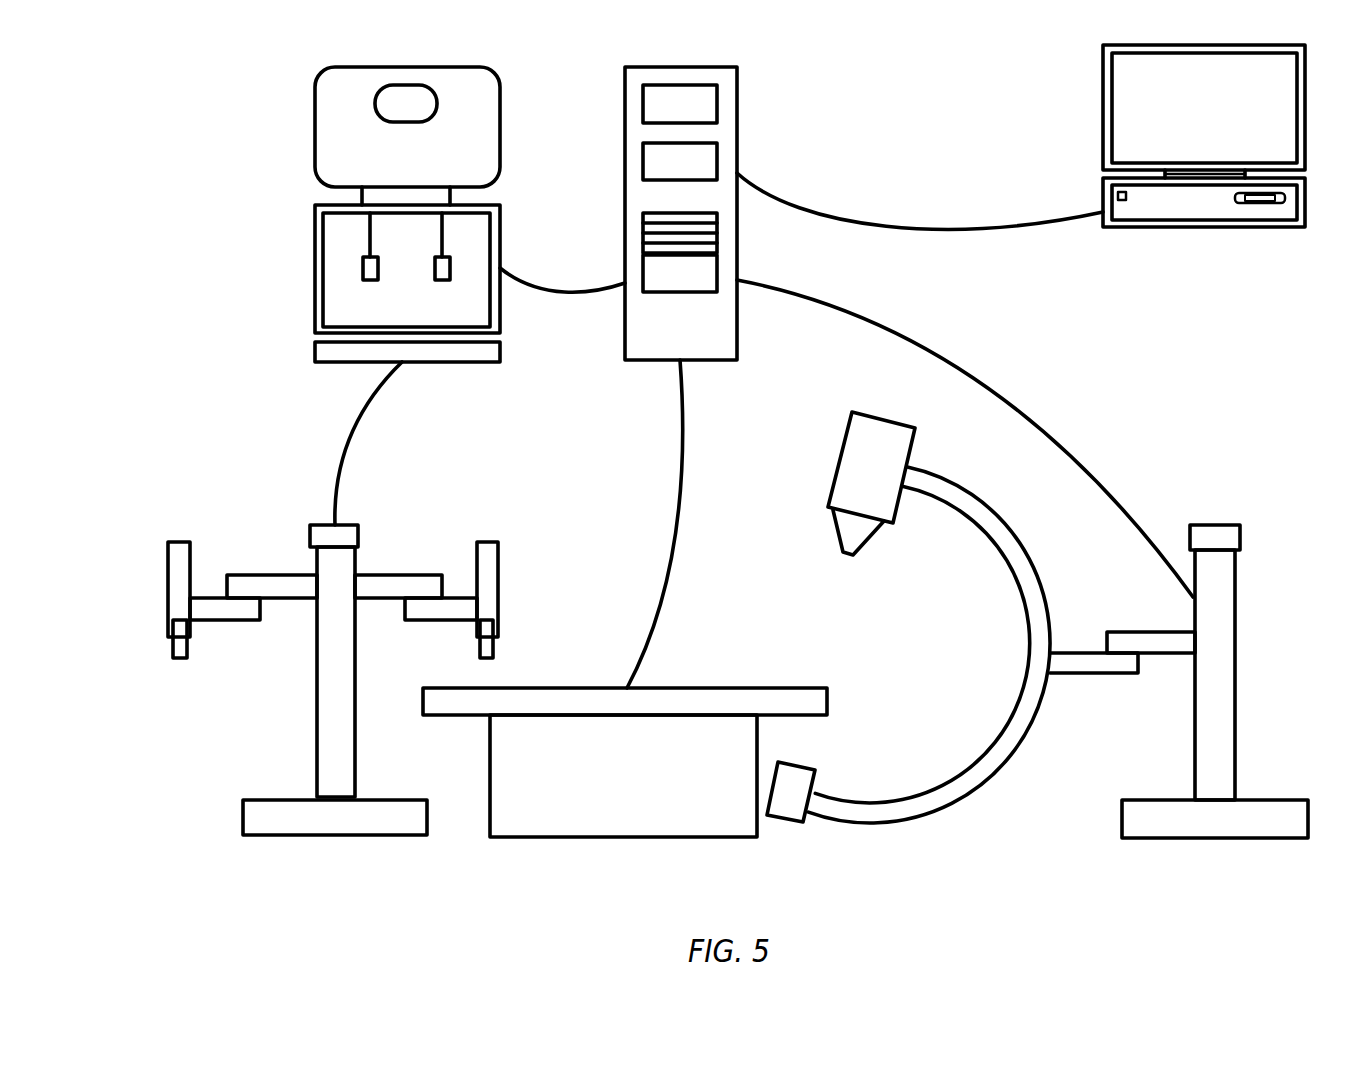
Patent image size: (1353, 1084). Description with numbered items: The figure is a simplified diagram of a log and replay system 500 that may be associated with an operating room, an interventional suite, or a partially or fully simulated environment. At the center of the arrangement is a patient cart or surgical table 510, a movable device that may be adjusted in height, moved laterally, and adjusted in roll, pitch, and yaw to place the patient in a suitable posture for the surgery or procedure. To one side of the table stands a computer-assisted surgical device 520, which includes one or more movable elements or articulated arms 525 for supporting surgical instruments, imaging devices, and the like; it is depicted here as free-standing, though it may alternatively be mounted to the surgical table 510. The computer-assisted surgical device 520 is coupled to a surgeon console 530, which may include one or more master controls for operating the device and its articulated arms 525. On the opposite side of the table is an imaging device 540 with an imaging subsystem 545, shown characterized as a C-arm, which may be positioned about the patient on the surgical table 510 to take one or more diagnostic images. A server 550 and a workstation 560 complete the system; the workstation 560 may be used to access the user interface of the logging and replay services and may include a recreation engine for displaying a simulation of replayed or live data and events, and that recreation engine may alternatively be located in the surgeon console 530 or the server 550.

The log and replay system 500 is at (981, 131).
The surgical table 510 is at (575, 837).
The computer-assisted surgical device 520 is at (313, 692).
The articulated arms 525 is at (168, 565).
The surgeon console 530 is at (315, 263).
The imaging device 540 is at (1235, 643).
The imaging subsystem 545 is at (1018, 677).
The server 550 is at (737, 128).
The workstation 560 is at (1152, 227).